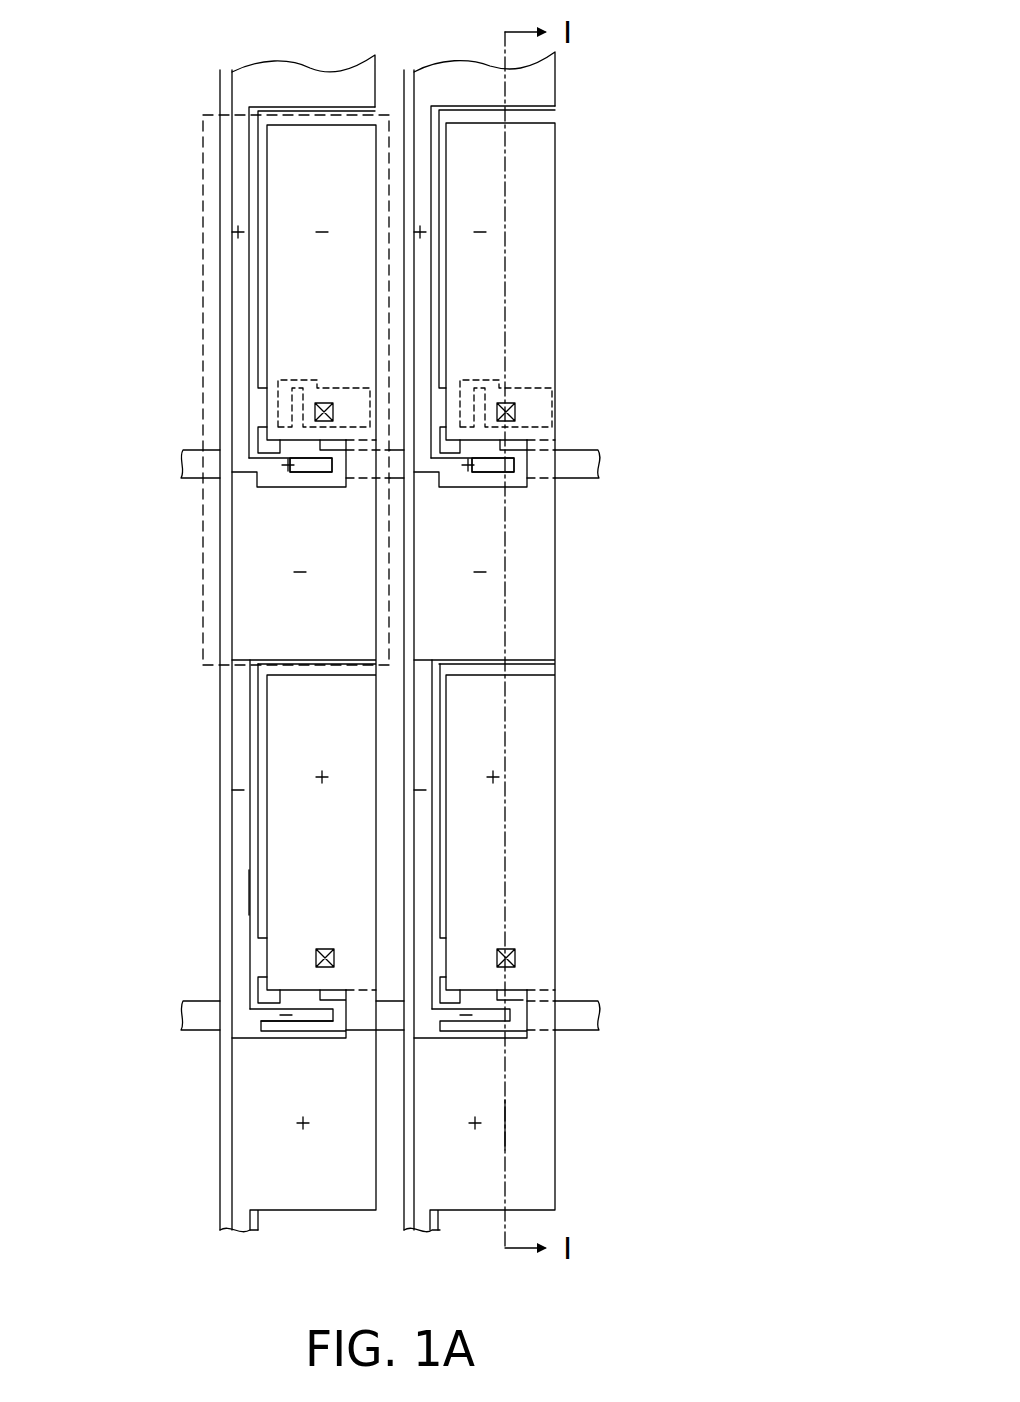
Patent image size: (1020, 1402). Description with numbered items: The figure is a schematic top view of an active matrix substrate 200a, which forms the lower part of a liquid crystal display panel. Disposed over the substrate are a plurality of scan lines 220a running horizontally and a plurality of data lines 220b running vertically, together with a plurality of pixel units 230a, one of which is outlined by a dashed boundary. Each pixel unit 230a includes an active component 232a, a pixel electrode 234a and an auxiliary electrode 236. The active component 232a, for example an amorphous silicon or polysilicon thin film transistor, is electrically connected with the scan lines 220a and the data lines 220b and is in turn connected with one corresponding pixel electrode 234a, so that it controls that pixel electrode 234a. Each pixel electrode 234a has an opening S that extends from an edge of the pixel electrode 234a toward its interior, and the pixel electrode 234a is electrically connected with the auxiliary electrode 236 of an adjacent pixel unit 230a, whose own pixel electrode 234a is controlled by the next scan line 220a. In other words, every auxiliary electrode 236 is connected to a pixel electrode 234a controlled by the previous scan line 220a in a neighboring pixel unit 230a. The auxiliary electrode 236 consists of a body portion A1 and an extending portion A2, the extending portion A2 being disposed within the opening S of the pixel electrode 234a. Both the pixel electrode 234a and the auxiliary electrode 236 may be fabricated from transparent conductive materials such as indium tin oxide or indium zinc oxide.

The active matrix substrate 200a is at (690, 1283).
The scan line 220a is at (575, 463).
The data line 220b is at (228, 1231).
The pixel unit 230a is at (203, 158).
The active component 232a is at (538, 382).
The pixel electrode 234a is at (287, 268).
The auxiliary electrode 236 is at (240, 360).
The body portion A1 is at (240, 893).
The extending portion A2 is at (273, 1017).
The opening S is at (324, 457).